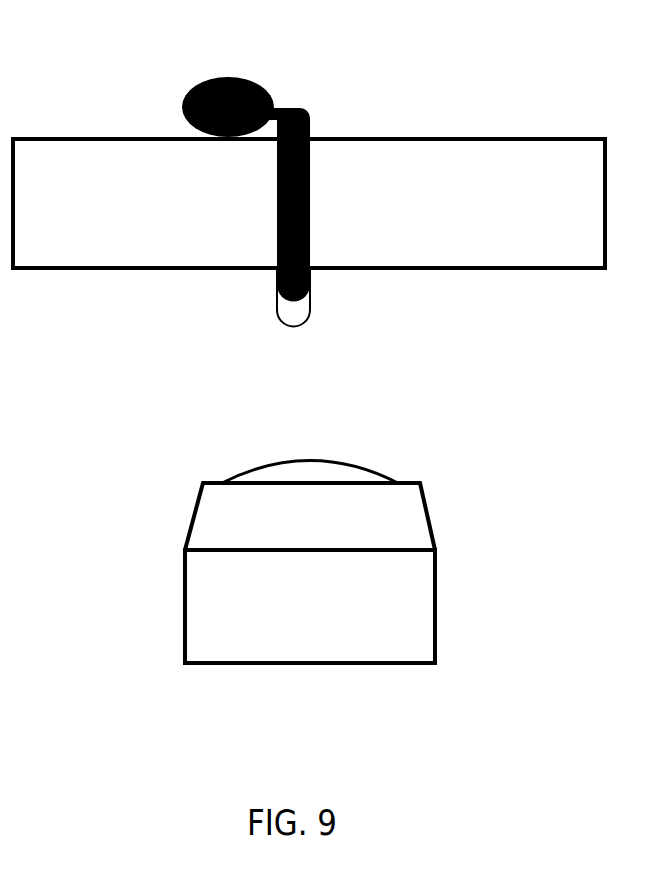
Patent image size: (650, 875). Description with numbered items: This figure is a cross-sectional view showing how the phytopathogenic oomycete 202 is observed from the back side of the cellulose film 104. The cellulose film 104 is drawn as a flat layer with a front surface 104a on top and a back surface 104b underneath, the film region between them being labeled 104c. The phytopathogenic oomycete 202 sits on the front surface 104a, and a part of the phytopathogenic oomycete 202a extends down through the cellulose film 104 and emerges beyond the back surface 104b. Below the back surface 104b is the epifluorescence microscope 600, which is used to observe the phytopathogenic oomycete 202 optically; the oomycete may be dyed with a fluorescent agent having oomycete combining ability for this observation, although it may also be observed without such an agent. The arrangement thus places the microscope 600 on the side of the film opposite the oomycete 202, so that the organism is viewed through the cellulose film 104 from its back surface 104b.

The cellulose film 104 is at (476, 137).
The front surface of the cellulose film 104a is at (383, 137).
The back surface of the cellulose film 104b is at (362, 270).
The substrate body 104c is at (165, 233).
The phytopathogenic oomycete 202 is at (195, 87).
The part of phytopathogenic oomycete 202a is at (291, 298).
The microscope 600 is at (202, 608).